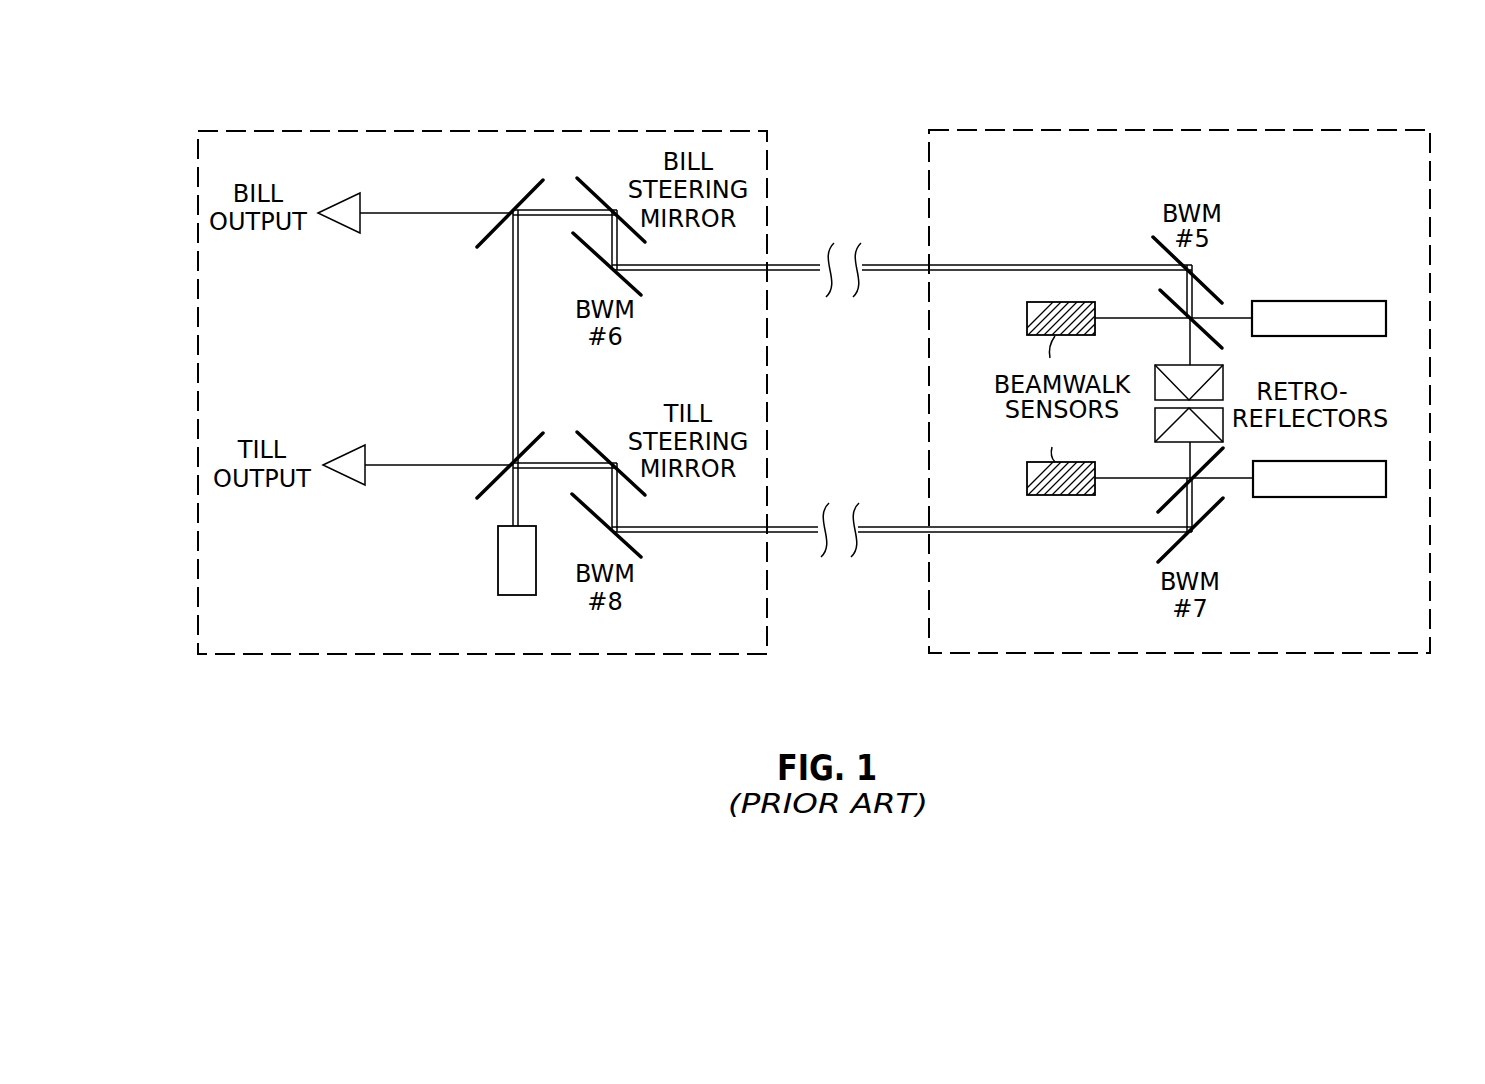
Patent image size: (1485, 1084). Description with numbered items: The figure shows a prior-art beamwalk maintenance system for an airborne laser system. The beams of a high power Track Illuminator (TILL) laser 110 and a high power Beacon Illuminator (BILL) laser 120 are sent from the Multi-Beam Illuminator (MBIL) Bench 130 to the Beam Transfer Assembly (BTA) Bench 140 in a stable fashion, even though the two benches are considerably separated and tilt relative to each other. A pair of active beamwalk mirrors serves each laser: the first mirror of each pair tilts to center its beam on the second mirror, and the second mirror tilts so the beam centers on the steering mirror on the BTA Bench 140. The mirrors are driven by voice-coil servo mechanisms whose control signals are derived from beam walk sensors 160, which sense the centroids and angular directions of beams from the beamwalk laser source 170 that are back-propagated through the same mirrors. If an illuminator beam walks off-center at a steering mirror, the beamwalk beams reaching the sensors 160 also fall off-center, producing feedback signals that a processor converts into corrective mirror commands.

The Track Illuminator (TILL) laser 110 is at (1365, 548).
The Beacon Illuminator (BILL) laser 120 is at (1338, 249).
The Multi-Beam Illuminator (MBIL) Bench 130 is at (1218, 121).
The Beam Transfer Assembly (BTA) Bench 140 is at (556, 121).
The beam walk sensors 160 is at (1027, 303).
The beamwalk laser source 170 is at (518, 603).